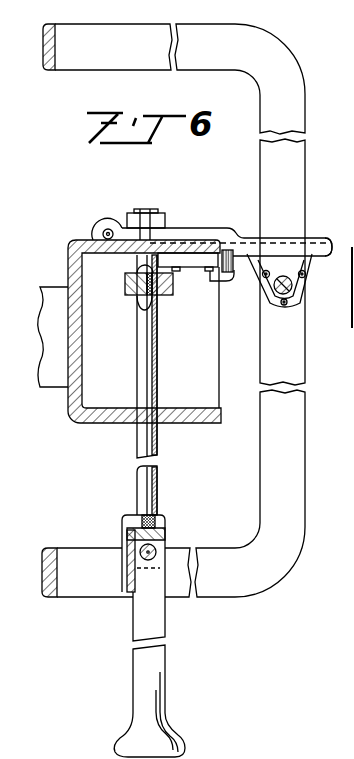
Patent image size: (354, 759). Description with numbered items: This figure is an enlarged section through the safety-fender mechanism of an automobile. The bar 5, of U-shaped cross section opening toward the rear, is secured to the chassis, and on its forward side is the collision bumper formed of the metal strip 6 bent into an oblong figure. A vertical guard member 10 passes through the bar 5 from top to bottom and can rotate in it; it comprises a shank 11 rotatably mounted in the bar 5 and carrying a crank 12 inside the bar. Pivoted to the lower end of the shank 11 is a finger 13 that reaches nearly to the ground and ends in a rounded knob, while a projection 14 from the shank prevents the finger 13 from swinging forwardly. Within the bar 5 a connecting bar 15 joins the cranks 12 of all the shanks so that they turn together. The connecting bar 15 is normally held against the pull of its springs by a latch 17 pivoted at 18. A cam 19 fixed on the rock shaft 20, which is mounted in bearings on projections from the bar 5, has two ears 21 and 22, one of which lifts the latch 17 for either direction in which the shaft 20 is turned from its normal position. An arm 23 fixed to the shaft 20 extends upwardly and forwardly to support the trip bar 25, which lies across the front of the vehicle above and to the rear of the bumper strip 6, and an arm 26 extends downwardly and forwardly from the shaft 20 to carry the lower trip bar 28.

The bar 5 is at (79, 357).
The metal strip 6 is at (50, 378).
The vertical guard member 10 is at (160, 207).
The shank 11 is at (150, 482).
The crank 12 is at (149, 313).
The finger 13 is at (155, 625).
The projection 14 is at (122, 583).
The connecting bar 15 is at (137, 298).
The latch 17 is at (239, 278).
The pivot 18 is at (100, 233).
The cam 19 is at (271, 318).
The rock shaft 20 is at (294, 307).
The ear 21 is at (272, 250).
The ear 22 is at (324, 256).
The arm 23 is at (295, 165).
The trip bar 25 is at (58, 60).
The arm 26 is at (296, 481).
The trip bar 28 is at (60, 572).